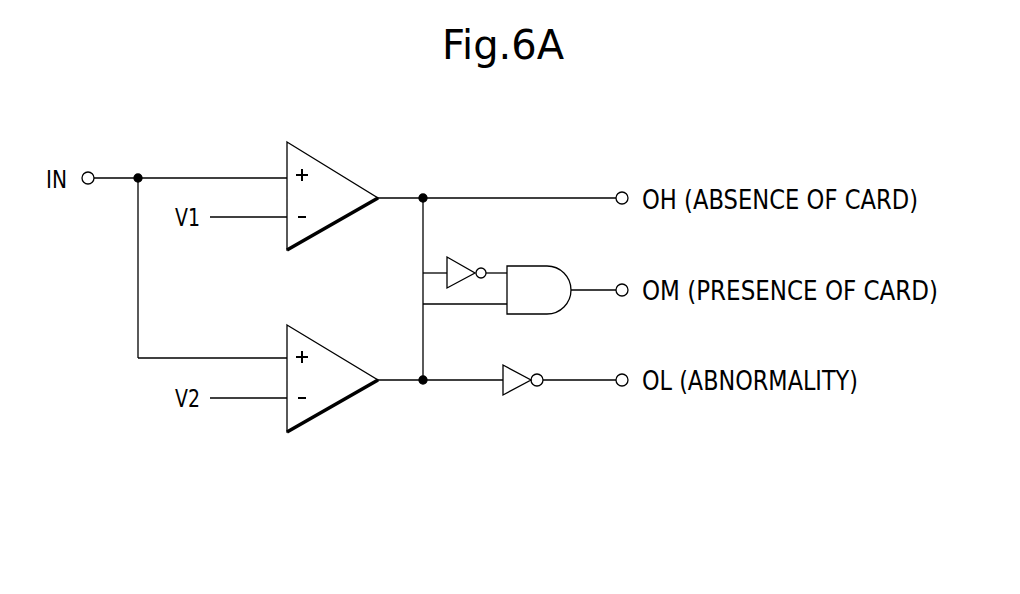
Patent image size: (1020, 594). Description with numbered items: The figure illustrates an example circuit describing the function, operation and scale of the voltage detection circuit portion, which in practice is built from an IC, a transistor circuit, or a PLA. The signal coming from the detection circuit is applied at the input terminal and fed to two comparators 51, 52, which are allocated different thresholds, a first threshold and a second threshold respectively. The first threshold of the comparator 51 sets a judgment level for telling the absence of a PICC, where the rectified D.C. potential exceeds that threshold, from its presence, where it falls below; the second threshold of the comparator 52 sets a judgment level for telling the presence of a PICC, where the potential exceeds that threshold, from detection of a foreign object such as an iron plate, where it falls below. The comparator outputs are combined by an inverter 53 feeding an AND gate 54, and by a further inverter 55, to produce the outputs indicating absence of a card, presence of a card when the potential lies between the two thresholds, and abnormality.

The comparator 51 is at (345, 175).
The comparator 52 is at (328, 348).
The inverter 53 is at (457, 261).
The AND gate 54 is at (548, 262).
The inverter 55 is at (513, 390).